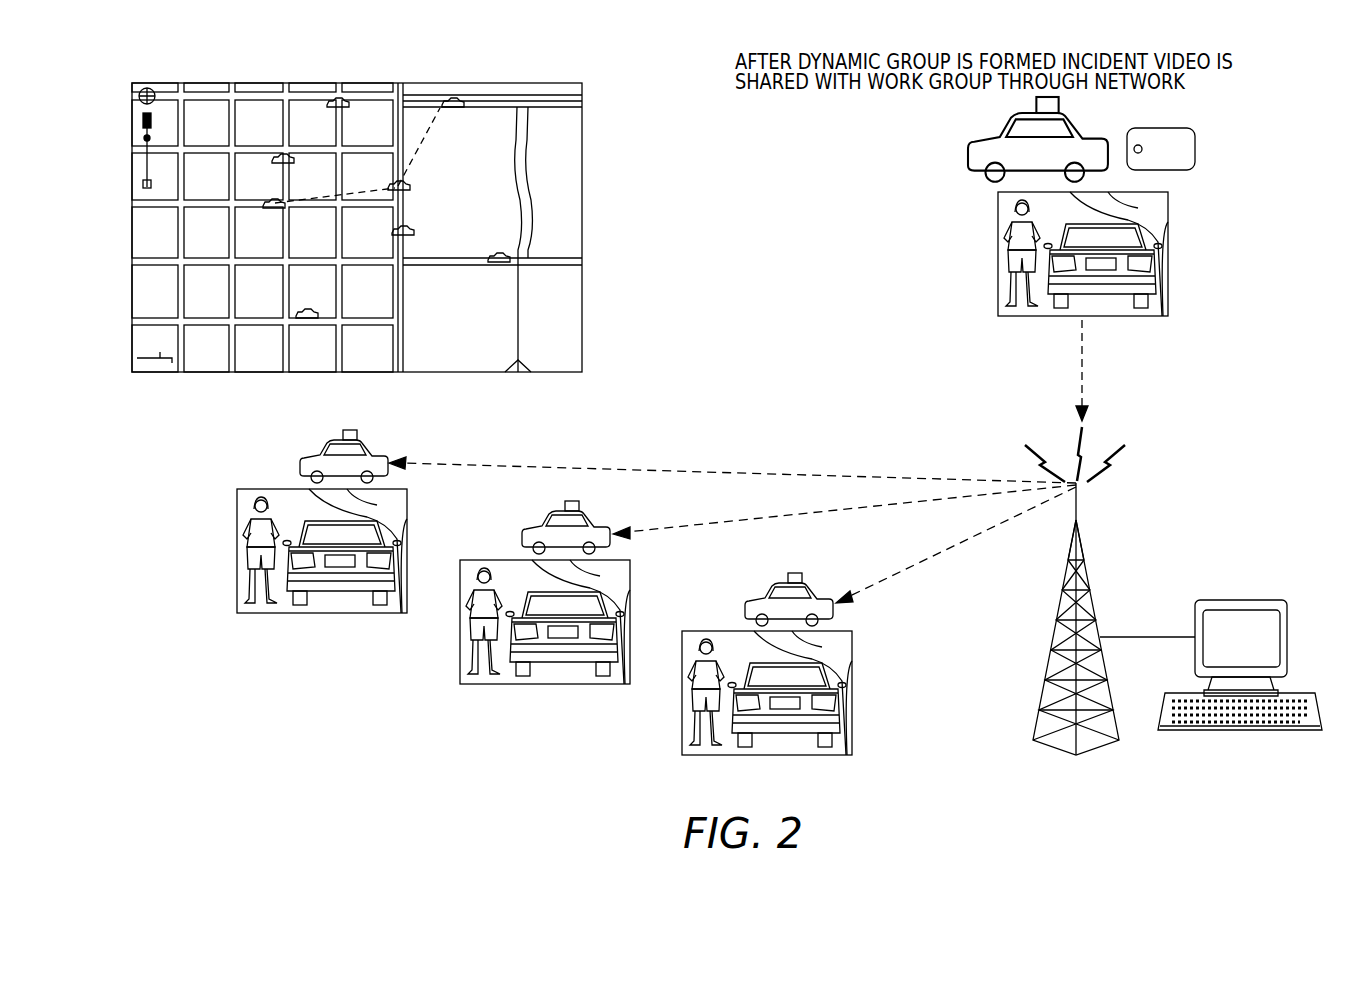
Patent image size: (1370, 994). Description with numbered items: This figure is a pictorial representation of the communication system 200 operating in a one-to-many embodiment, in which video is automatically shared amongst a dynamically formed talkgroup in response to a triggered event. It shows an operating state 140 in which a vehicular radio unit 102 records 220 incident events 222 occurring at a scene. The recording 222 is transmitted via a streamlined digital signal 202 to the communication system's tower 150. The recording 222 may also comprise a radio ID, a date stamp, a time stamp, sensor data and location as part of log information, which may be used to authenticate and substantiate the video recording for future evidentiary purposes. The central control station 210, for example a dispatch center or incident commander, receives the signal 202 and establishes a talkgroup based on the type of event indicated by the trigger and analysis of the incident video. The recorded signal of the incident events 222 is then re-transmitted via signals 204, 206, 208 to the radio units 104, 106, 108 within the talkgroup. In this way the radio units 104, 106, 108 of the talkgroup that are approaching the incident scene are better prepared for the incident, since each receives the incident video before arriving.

The operating state 140 is at (546, 409).
The vehicular radio unit 102 is at (976, 135).
The records 220 is at (1195, 148).
The incident events recording 222 is at (1168, 214).
The streamlined digital signal 202 is at (1083, 372).
The tower 150 is at (1084, 547).
The central control station 210 is at (1285, 694).
The communication system 200 is at (1198, 804).
The radio unit 104 is at (365, 441).
The radio unit 106 is at (590, 512).
The radio unit 108 is at (812, 583).
The signal 204 is at (731, 471).
The signal 206 is at (731, 527).
The signal 208 is at (957, 545).